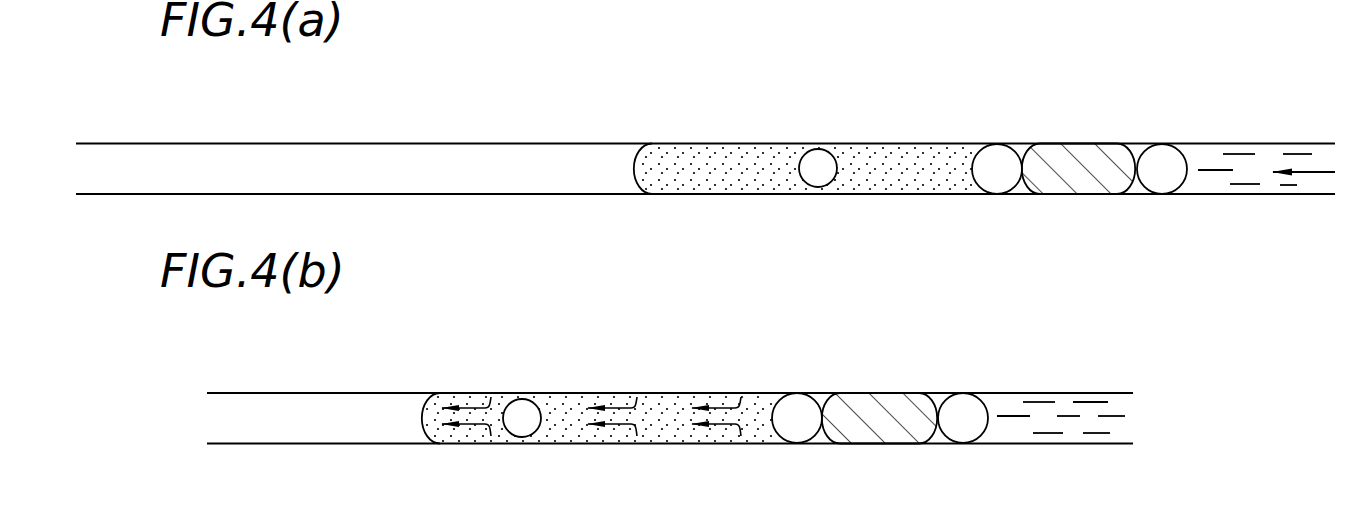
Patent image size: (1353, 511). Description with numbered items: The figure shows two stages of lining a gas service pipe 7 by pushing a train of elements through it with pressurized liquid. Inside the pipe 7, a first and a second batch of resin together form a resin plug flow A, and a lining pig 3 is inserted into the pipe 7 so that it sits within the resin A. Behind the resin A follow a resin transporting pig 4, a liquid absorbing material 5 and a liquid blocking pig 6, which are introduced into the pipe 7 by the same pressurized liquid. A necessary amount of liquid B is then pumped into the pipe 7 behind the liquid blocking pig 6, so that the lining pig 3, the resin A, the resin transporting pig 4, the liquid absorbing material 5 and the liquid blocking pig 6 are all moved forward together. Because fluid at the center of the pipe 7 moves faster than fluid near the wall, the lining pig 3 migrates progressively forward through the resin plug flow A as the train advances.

In FIG. 4A, the pipe 7 is at (428, 143).
In FIG. 4B, the pipe 7 is at (330, 393).
In FIG. 4A, the resin plug flow A is at (698, 152).
In FIG. 4B, the resin plug flow A is at (440, 418).
In FIG. 4A, the lining pig 3 is at (813, 160).
In FIG. 4B, the lining pig 3 is at (522, 410).
In FIG. 4A, the resin transporting pig 4 is at (993, 158).
In FIG. 4B, the resin transporting pig 4 is at (793, 408).
In FIG. 4A, the liquid absorbing material 5 is at (1085, 155).
In FIG. 4B, the liquid absorbing material 5 is at (890, 397).
In FIG. 4A, the liquid blocking pig 6 is at (1160, 155).
In FIG. 4B, the liquid blocking pig 6 is at (968, 415).
In FIG. 4A, the liquid B is at (1222, 172).
In FIG. 4B, the liquid B is at (1075, 422).